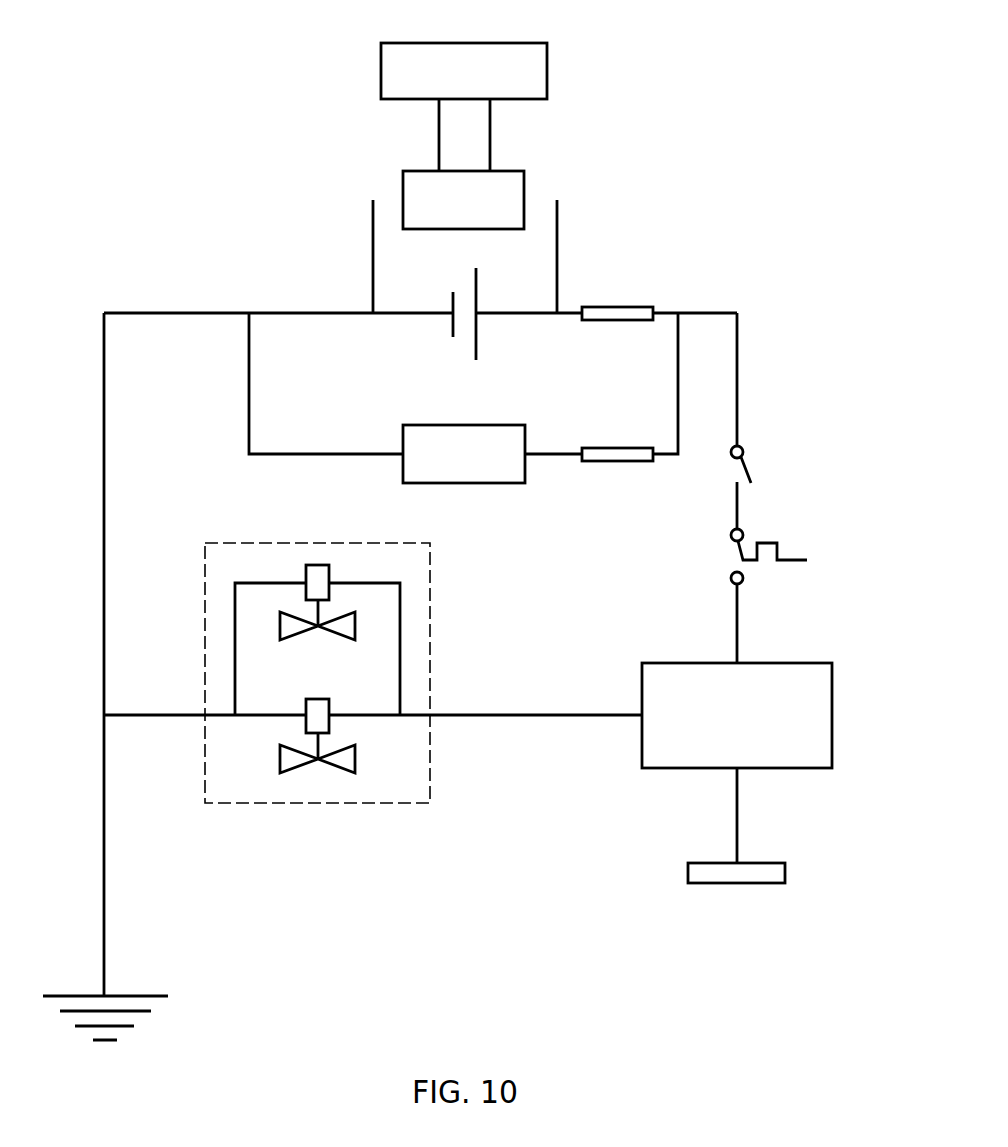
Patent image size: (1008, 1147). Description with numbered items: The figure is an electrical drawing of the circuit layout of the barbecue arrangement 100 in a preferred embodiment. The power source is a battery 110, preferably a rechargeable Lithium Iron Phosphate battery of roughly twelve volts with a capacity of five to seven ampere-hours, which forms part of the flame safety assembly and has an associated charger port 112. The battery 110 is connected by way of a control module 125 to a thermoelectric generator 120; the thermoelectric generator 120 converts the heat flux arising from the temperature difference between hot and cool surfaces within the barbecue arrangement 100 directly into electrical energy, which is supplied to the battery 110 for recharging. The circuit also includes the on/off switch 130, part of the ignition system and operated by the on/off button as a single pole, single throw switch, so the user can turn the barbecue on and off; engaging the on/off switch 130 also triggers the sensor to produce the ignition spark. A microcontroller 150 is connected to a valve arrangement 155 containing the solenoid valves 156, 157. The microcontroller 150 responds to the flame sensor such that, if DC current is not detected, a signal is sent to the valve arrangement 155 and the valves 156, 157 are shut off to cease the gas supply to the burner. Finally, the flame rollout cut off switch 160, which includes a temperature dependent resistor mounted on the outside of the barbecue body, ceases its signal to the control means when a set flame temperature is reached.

The barbecue arrangement 100 is at (153, 108).
The battery 110 is at (450, 322).
The charger port 112 is at (490, 483).
The thermoelectric generator 120 is at (547, 70).
The control module 125 is at (524, 183).
The on/off switch 130 is at (750, 473).
The microcontroller 150 is at (832, 715).
The valve arrangement 155 is at (430, 637).
The solenoid valve 156 is at (306, 580).
The solenoid valve 157 is at (306, 727).
The flame rollout cut off switch 160 is at (747, 548).